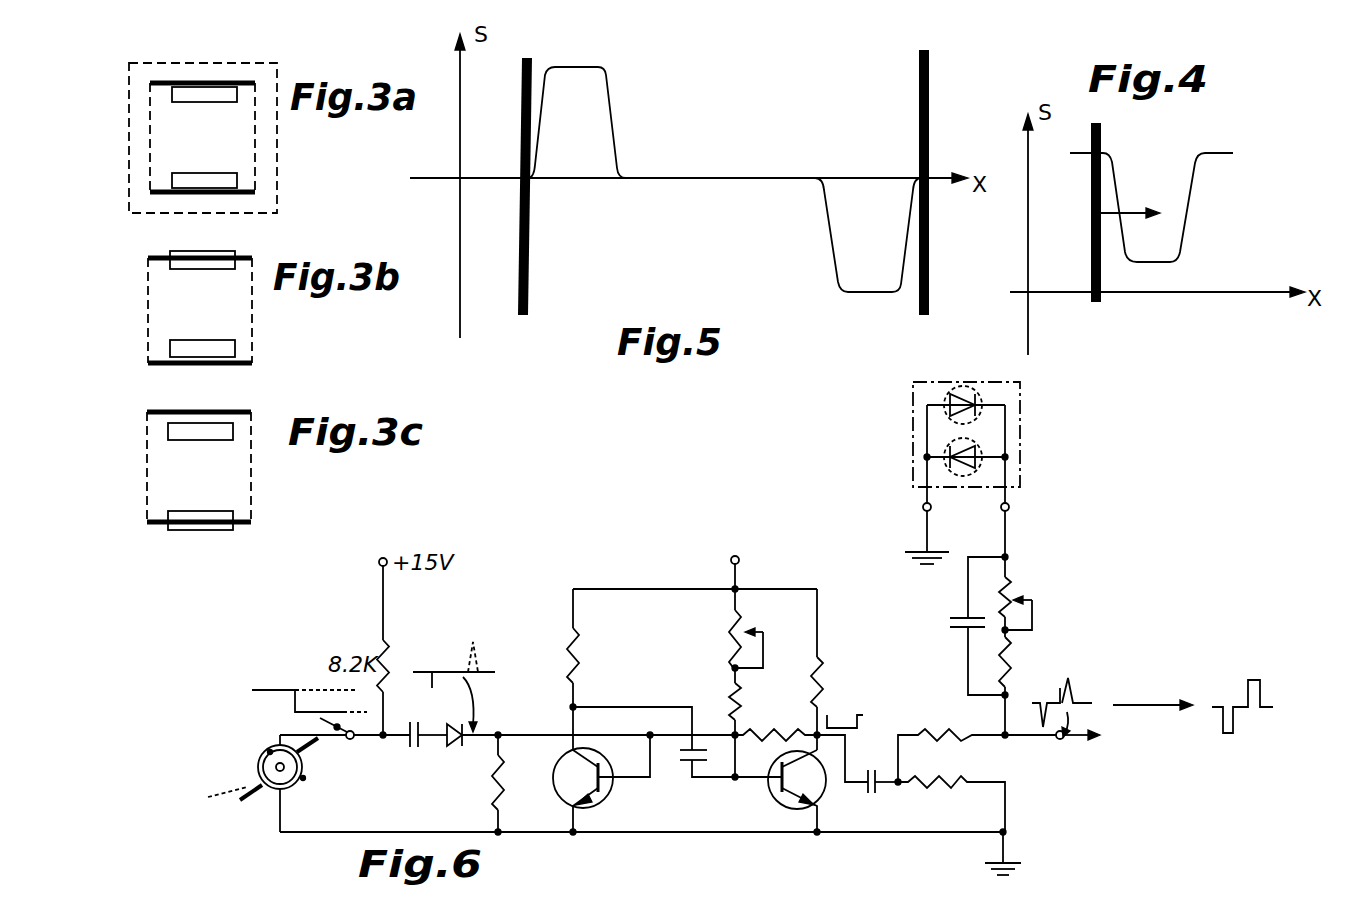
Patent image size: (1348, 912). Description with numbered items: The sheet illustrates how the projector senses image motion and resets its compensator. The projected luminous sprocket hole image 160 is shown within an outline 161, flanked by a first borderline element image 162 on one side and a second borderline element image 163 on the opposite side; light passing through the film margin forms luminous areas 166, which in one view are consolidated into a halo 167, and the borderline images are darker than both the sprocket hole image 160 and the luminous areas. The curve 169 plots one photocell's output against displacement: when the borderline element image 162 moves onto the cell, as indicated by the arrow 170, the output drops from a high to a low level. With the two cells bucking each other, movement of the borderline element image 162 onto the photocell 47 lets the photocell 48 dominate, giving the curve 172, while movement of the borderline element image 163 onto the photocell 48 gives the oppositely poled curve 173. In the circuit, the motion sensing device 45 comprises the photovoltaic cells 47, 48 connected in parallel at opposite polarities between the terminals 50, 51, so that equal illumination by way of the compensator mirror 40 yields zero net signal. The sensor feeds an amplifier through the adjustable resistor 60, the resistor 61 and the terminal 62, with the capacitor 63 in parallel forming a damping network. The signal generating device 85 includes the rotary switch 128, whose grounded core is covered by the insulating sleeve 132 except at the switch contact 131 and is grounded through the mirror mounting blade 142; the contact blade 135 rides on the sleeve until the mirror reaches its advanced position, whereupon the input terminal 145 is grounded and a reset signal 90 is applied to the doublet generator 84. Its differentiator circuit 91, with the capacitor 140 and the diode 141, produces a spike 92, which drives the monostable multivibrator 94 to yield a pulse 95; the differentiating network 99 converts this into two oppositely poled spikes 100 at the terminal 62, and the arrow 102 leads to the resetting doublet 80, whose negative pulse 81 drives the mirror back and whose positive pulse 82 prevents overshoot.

In FIG. 6, the compensator mirror 40 is at (244, 801).
In FIG. 6, the motion sensing device 45 is at (968, 442).
In FIG. 3A, the photovoltaic cell 47 is at (172, 93).
In FIG. 3B, the photovoltaic cell 47 is at (170, 263).
In FIG. 3C, the photovoltaic cell 47 is at (168, 430).
In FIG. 6, the photovoltaic cell 47 is at (985, 402).
In FIG. 3A, the photovoltaic cell 48 is at (172, 180).
In FIG. 3B, the photovoltaic cell 48 is at (170, 348).
In FIG. 3C, the photovoltaic cell 48 is at (168, 515).
In FIG. 6, the photovoltaic cell 48 is at (985, 452).
In FIG. 6, the terminal 50 is at (922, 508).
In FIG. 6, the terminal 51 is at (1011, 505).
In FIG. 6, the resistor 60 is at (1010, 582).
In FIG. 6, the resistor 61 is at (1012, 662).
In FIG. 6, the terminal 62 is at (1060, 742).
In FIG. 6, the capacitor 63 is at (948, 622).
In FIG. 6, the resetting doublet 80 is at (1235, 694).
In FIG. 6, the negative pulse 81 is at (1219, 723).
In FIG. 6, the positive pulse 82 is at (1270, 684).
In FIG. 6, the doublet generator 84 is at (525, 617).
In FIG. 6, the signal generating device 85 is at (273, 774).
In FIG. 6, the reset signal 90 is at (282, 685).
In FIG. 6, the differentiator circuit 91 is at (463, 765).
In FIG. 6, the spike 92 is at (413, 672).
In FIG. 6, the monostable multivibrator 94 is at (692, 818).
In FIG. 6, the pulse 95 is at (866, 712).
In FIG. 6, the differentiating network 99 is at (985, 828).
In FIG. 6, the oppositely poled spikes 100 is at (1060, 690).
In FIG. 6, the arrow 102 is at (1180, 700).
In FIG. 6, the rotary switch 128 is at (305, 778).
In FIG. 6, the switch contact 131 is at (268, 752).
In FIG. 6, the insulating sleeve 132 is at (258, 765).
In FIG. 6, the contact blade 135 is at (280, 738).
In FIG. 6, the capacitor 140 is at (436, 720).
In FIG. 6, the diode 141 is at (455, 748).
In FIG. 6, the mirror mounting blade 142 is at (283, 814).
In FIG. 6, the input terminal 145 is at (354, 737).
In FIG. 3A, the sprocket hole image 160 is at (214, 143).
In FIG. 3B, the sprocket hole image 160 is at (214, 318).
In FIG. 3C, the sprocket hole image 160 is at (213, 482).
In FIG. 3A, the outline 161 is at (150, 123).
In FIG. 3B, the outline 161 is at (148, 307).
In FIG. 3C, the outline 161 is at (147, 468).
In FIG. 3A, the first borderline element image 162 is at (200, 82).
In FIG. 3B, the first borderline element image 162 is at (165, 258).
In FIG. 3C, the first borderline element image 162 is at (175, 412).
In FIG. 5, the first borderline element image 162 is at (519, 104).
In FIG. 4, the first borderline element image 162 is at (1090, 198).
In FIG. 3A, the second borderline element image 163 is at (157, 192).
In FIG. 3B, the second borderline element image 163 is at (240, 366).
In FIG. 3C, the second borderline element image 163 is at (195, 528).
In FIG. 5, the second borderline element image 163 is at (929, 118).
In FIG. 3A, the luminous area 166 is at (235, 72).
In FIG. 3A, the halo 167 is at (126, 80).
In FIG. 4, the curve 169 is at (1203, 230).
In FIG. 4, the arrow 170 is at (1128, 210).
In FIG. 5, the curve 172 is at (620, 100).
In FIG. 5, the curve 173 is at (828, 252).